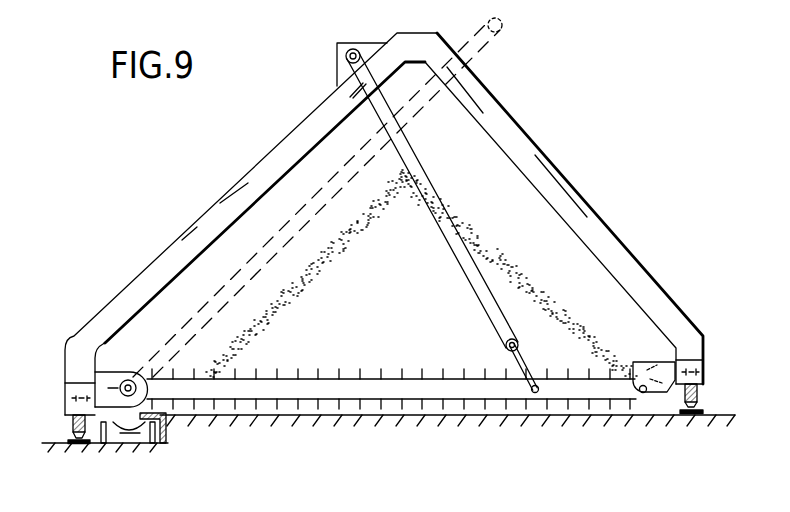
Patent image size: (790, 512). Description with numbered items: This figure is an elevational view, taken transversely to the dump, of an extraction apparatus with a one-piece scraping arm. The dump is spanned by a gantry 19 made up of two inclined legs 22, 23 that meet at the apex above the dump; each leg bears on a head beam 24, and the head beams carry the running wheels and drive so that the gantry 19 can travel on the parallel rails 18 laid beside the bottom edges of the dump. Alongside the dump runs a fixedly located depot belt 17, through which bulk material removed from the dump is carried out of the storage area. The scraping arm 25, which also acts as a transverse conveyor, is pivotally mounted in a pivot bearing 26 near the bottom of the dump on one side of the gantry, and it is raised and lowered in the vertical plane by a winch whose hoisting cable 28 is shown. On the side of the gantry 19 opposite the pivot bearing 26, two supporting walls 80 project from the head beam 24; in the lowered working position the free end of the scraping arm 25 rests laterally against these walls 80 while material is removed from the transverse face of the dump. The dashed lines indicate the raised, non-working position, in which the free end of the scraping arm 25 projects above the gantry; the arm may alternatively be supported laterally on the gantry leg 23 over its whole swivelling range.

The gantry 19 is at (306, 96).
The inclined leg 22 is at (232, 192).
The inclined leg 23 is at (560, 183).
The hoisting cable 28 is at (413, 156).
The scraping arm 25 is at (300, 240).
The pivot bearing 26 is at (125, 376).
The head beam 24 is at (65, 393).
The supporting wall 80 is at (655, 364).
The rail 18 is at (77, 447).
The depot belt 17 is at (135, 436).